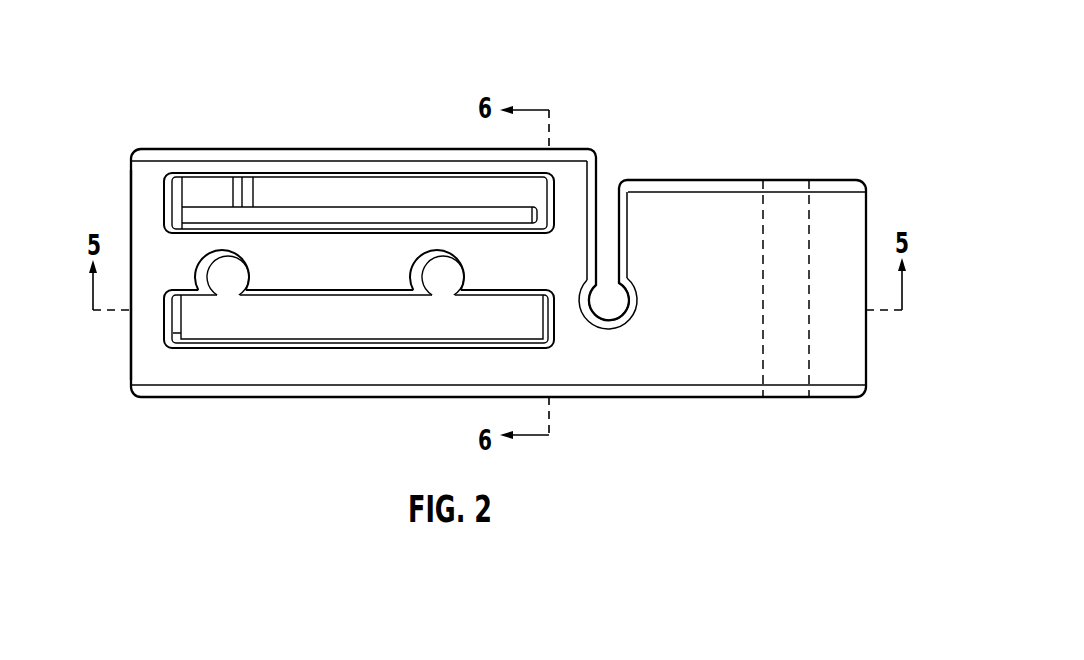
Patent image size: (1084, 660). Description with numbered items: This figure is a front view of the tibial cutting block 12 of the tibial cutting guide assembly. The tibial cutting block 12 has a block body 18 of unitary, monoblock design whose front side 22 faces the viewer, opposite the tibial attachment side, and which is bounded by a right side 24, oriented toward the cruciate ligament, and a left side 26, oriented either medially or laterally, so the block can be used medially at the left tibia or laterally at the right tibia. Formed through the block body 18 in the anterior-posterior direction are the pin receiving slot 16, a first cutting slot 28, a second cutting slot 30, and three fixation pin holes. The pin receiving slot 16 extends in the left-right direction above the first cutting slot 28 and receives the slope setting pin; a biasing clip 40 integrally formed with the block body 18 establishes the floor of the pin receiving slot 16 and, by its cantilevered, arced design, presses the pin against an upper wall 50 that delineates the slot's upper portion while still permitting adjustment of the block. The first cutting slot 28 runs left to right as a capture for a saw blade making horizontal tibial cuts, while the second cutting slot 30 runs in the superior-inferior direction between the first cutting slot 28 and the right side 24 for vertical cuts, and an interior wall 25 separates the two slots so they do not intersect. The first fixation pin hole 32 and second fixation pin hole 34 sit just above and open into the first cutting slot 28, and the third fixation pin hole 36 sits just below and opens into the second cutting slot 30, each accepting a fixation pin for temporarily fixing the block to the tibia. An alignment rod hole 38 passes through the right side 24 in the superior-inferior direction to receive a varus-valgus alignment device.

The tibial cutting block 12 is at (232, 100).
The pin receiving slot 16 is at (272, 187).
The block body 18 is at (578, 138).
The front side 22 is at (575, 353).
The right side 24 is at (878, 360).
The interior wall 25 is at (573, 185).
The left side 26 is at (121, 351).
The first cutting slot 28 is at (363, 330).
The second cutting slot 30 is at (603, 253).
The first fixation pin hole 32 is at (228, 277).
The second fixation pin hole 34 is at (438, 278).
The third fixation pin hole 36 is at (607, 298).
The alignment rod hole 38 is at (789, 203).
The biasing clip 40 is at (307, 221).
The upper wall 50 is at (398, 181).